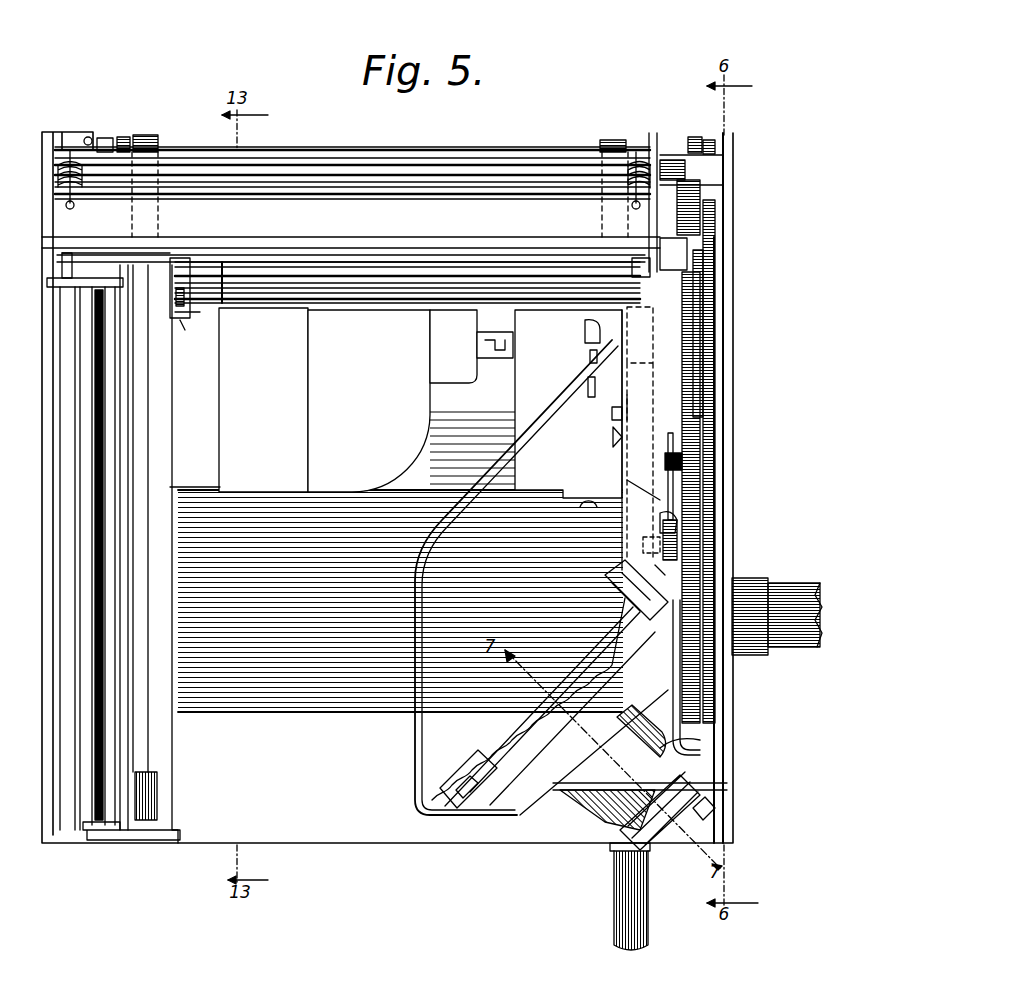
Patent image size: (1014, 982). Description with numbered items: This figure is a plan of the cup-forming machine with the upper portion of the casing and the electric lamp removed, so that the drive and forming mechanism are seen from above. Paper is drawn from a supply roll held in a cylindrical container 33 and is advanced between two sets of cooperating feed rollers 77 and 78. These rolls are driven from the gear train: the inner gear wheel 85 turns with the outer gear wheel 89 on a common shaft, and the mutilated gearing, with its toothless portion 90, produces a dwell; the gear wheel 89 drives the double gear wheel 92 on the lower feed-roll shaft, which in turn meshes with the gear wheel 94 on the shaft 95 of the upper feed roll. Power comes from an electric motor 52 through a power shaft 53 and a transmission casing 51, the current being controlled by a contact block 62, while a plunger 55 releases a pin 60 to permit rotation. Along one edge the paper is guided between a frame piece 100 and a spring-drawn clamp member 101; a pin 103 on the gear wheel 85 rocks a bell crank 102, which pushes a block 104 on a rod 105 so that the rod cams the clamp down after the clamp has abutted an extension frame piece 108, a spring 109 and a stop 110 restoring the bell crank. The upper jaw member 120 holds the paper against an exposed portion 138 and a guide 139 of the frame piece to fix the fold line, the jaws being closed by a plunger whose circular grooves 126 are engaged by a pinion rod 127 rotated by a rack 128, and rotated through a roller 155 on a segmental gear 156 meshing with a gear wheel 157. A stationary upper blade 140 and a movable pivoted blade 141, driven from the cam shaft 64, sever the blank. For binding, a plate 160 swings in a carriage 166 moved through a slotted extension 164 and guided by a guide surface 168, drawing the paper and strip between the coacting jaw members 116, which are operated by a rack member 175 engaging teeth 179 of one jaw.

The feed roller 78 is at (141, 137).
The feed roller 77 is at (612, 140).
The gear wheel 94 is at (693, 137).
The double gear wheel 92 is at (708, 140).
The shaft 95 is at (706, 193).
The lateral slotted extension 164 is at (80, 290).
The stationary upper blade 140 is at (425, 247).
The movable pivoted blade 141 is at (523, 262).
The rod 105 is at (668, 275).
The inner gear wheel 85 is at (700, 300).
The outer gear wheel 89 is at (706, 325).
The toothless portion 90 is at (700, 375).
The frame piece 100 is at (627, 408).
The bell crank 102 is at (672, 433).
The pin 103 is at (682, 460).
The clamp member 101 is at (640, 490).
The stop 110 is at (677, 497).
The spring 109 is at (672, 530).
The block 104 is at (700, 540).
The extension frame piece 108 is at (663, 572).
The cam shaft 64 is at (373, 290).
The rack member 175 is at (195, 335).
The teeth 179 is at (183, 332).
The electric motor 52 is at (296, 400).
The power shaft 53 is at (485, 345).
The transmission casing 51 is at (527, 396).
The contact block 62 is at (612, 396).
The pin 60 is at (617, 447).
The exposed portion 138 is at (622, 600).
The roller 155 is at (722, 662).
The segmental gear 156 is at (680, 745).
The upper jaw member 120 is at (478, 740).
The guide 139 is at (410, 772).
The pinion rod 127 is at (690, 795).
The rack 128 is at (712, 804).
The jaw members 116 is at (142, 745).
The cylindrical container 33 is at (297, 690).
The plate 160 is at (112, 803).
The carriage 166 is at (70, 815).
The guide surface 168 is at (118, 835).
The gear wheel 157 is at (660, 790).
The circular grooves 126 is at (668, 845).
The plunger 55 is at (615, 898).